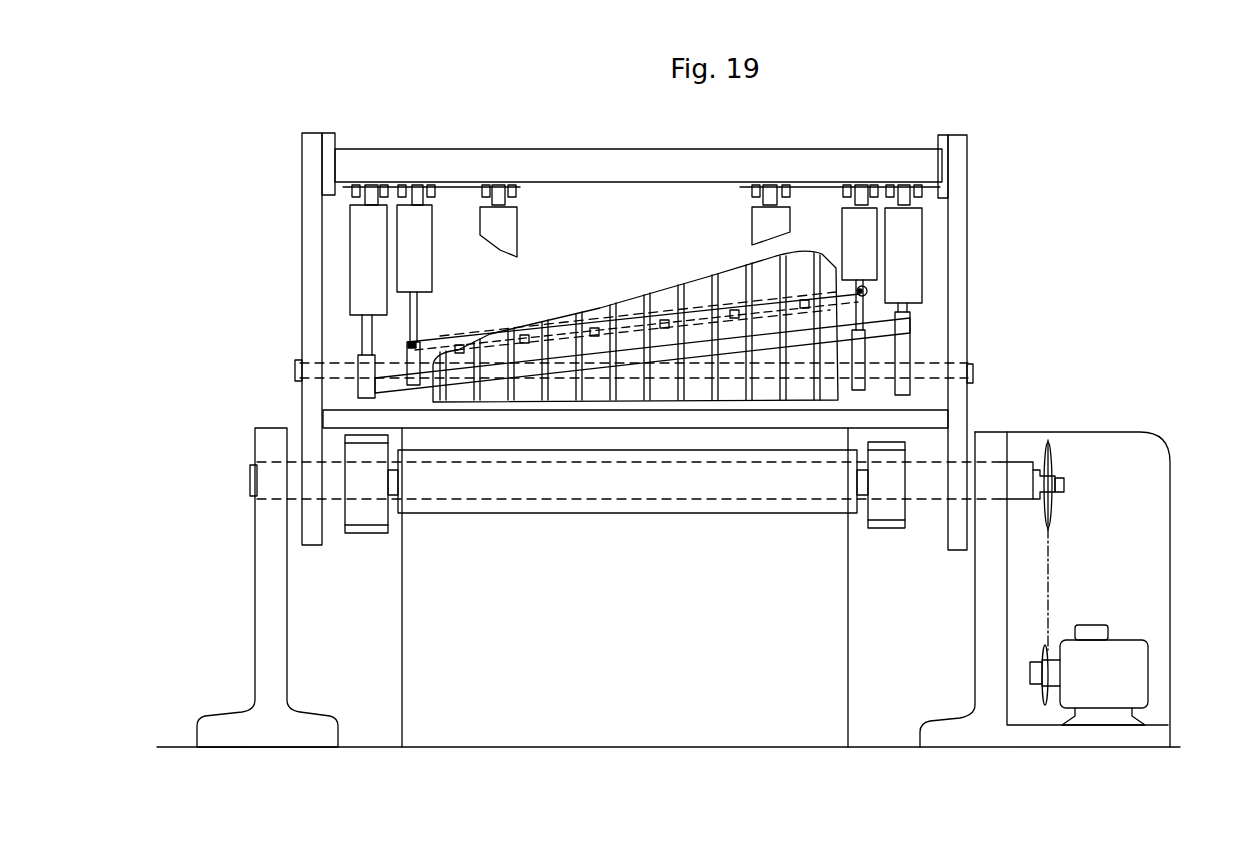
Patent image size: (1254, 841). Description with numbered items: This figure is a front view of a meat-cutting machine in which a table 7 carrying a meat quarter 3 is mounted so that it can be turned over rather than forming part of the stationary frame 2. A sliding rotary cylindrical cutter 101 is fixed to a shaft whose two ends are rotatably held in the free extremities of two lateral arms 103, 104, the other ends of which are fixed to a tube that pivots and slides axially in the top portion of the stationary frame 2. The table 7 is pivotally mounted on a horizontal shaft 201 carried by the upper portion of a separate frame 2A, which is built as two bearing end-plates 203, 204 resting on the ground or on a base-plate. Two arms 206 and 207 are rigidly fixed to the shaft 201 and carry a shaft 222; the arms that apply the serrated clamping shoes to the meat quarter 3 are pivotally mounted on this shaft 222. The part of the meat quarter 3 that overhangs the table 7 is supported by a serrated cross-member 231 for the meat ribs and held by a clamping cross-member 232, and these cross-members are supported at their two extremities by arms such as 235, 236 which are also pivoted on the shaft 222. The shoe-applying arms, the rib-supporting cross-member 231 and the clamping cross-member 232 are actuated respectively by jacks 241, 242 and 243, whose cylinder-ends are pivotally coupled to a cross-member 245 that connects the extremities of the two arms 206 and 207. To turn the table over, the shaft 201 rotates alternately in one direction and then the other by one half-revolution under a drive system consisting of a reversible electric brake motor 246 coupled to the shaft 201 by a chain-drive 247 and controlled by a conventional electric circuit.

The stationary frame 2 is at (402, 617).
The frame 2A is at (1175, 451).
The meat quarter 3 is at (700, 275).
The table 7 is at (335, 420).
The sliding rotary cylindrical cutter 101 is at (578, 514).
The lateral arm 103 is at (365, 510).
The lateral arm 104 is at (887, 520).
The horizontal shaft 201 is at (900, 610).
The bearing end-plate 203 is at (270, 600).
The bearing end-plate 204 is at (988, 652).
The arm 206 is at (313, 297).
The arm 207 is at (960, 287).
The shaft 222 is at (340, 368).
The serrated cross-member 231 is at (385, 387).
The clamping cross-member 232 is at (838, 290).
The arm 235 is at (902, 342).
The arm 236 is at (857, 360).
The jack 241 is at (507, 240).
The jack 242 is at (365, 215).
The jack 243 is at (408, 244).
The cross-member 245 is at (455, 162).
The reversible electric brake motor 246 is at (1130, 665).
The chain-drive 247 is at (1048, 545).